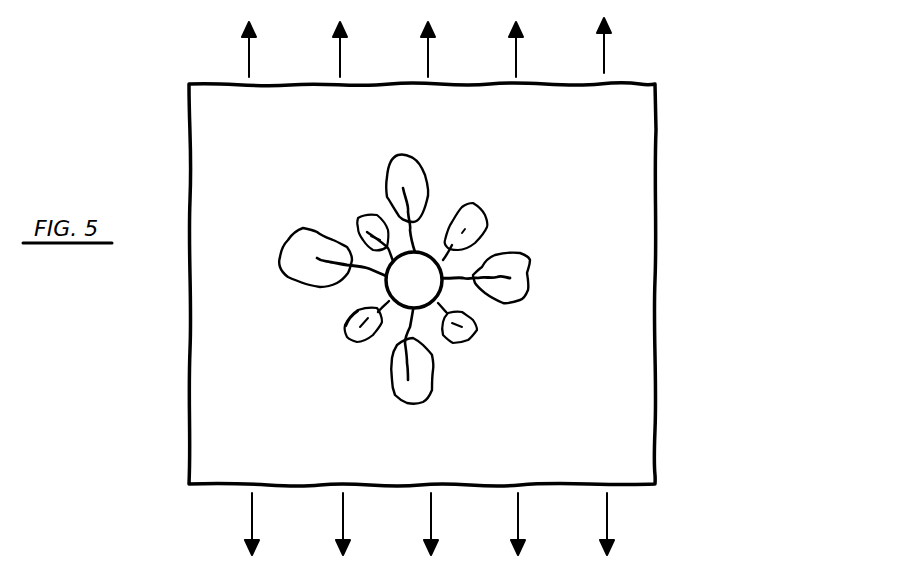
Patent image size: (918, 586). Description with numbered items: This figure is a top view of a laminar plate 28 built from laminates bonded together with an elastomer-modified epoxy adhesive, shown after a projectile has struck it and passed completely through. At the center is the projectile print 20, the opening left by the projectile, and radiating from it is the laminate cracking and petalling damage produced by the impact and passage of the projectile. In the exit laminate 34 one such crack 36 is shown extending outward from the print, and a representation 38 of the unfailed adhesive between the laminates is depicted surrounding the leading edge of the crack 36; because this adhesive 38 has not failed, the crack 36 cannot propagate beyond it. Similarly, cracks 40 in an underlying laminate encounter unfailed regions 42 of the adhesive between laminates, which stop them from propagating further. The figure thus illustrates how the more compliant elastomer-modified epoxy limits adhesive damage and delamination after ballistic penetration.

The projectile print 20 is at (388, 279).
The laminar plate 28 is at (700, 110).
The exit laminate 34 is at (617, 138).
The crack 36 is at (463, 275).
The unfailed adhesive representation 38 is at (535, 262).
The cracks 40 is at (382, 310).
The unfailed adhesive regions 42 is at (345, 333).